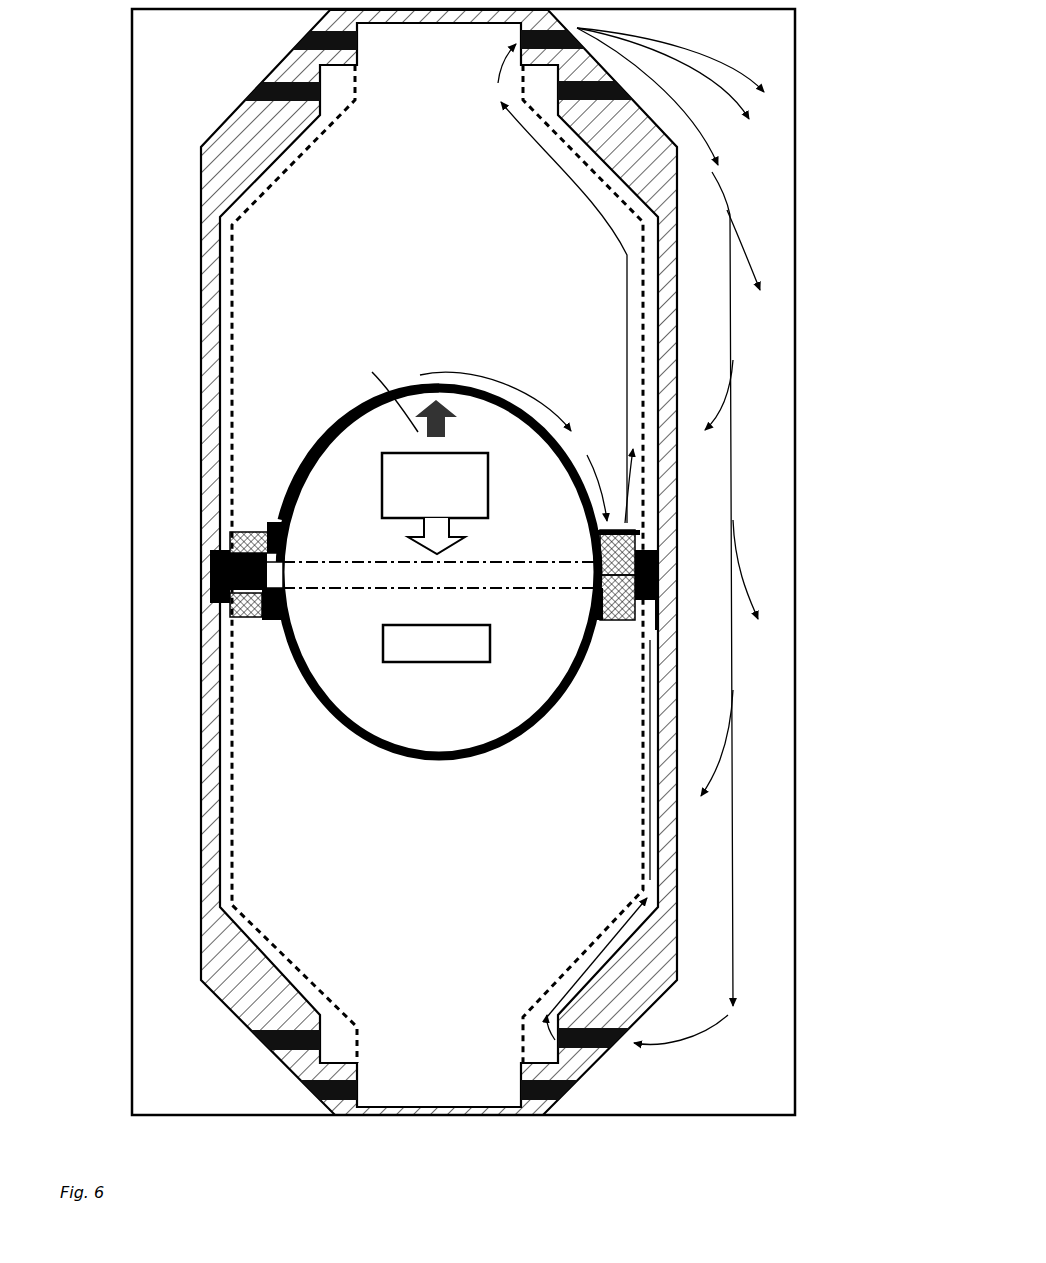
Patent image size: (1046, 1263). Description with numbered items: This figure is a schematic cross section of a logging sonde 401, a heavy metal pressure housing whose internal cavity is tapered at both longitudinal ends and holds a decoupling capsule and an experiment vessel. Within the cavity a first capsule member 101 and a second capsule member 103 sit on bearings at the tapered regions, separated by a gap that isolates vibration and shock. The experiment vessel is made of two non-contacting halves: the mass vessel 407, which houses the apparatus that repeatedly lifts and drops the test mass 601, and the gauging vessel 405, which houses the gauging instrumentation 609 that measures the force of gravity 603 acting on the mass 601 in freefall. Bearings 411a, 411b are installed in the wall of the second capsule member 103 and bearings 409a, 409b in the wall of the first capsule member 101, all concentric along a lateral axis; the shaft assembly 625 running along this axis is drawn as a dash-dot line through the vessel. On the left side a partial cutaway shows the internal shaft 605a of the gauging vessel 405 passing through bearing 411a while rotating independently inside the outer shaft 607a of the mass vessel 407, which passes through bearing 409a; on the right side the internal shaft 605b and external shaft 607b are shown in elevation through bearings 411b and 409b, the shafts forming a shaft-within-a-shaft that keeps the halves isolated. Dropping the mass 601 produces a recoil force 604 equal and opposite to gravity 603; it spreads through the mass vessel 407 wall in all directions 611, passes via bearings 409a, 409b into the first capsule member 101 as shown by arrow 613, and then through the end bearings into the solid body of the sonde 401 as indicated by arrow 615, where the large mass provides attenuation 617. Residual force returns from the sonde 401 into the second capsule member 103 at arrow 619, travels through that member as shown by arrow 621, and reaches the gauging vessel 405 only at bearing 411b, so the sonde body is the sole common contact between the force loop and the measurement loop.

The logging sonde 401 is at (130, 342).
The first capsule member 101 is at (300, 160).
The second capsule member 103 is at (248, 188).
The gauging vessel 405 is at (495, 750).
The mass vessel 407 is at (303, 458).
The bearing 409a is at (216, 603).
The bearing 409b is at (659, 628).
The bearing 411a is at (212, 582).
The bearing 411b is at (676, 558).
The test mass 601 is at (488, 500).
The force of gravity 603 is at (465, 545).
The recoil force 604 is at (447, 433).
The internal shaft 605a is at (250, 617).
The internal shaft 605b is at (608, 620).
The outer shaft 607a is at (254, 532).
The external shaft 607b is at (630, 620).
The gauging instrumentation 609 is at (437, 663).
The force transmission directions 611 is at (499, 401).
The force transfer arrow 613 is at (610, 476).
The force transfer arrow 615 is at (548, 281).
The attenuation 617 is at (680, 517).
The force transfer arrow 619 is at (681, 1043).
The force transfer arrow 621 is at (598, 840).
The shaft 625 is at (575, 612).